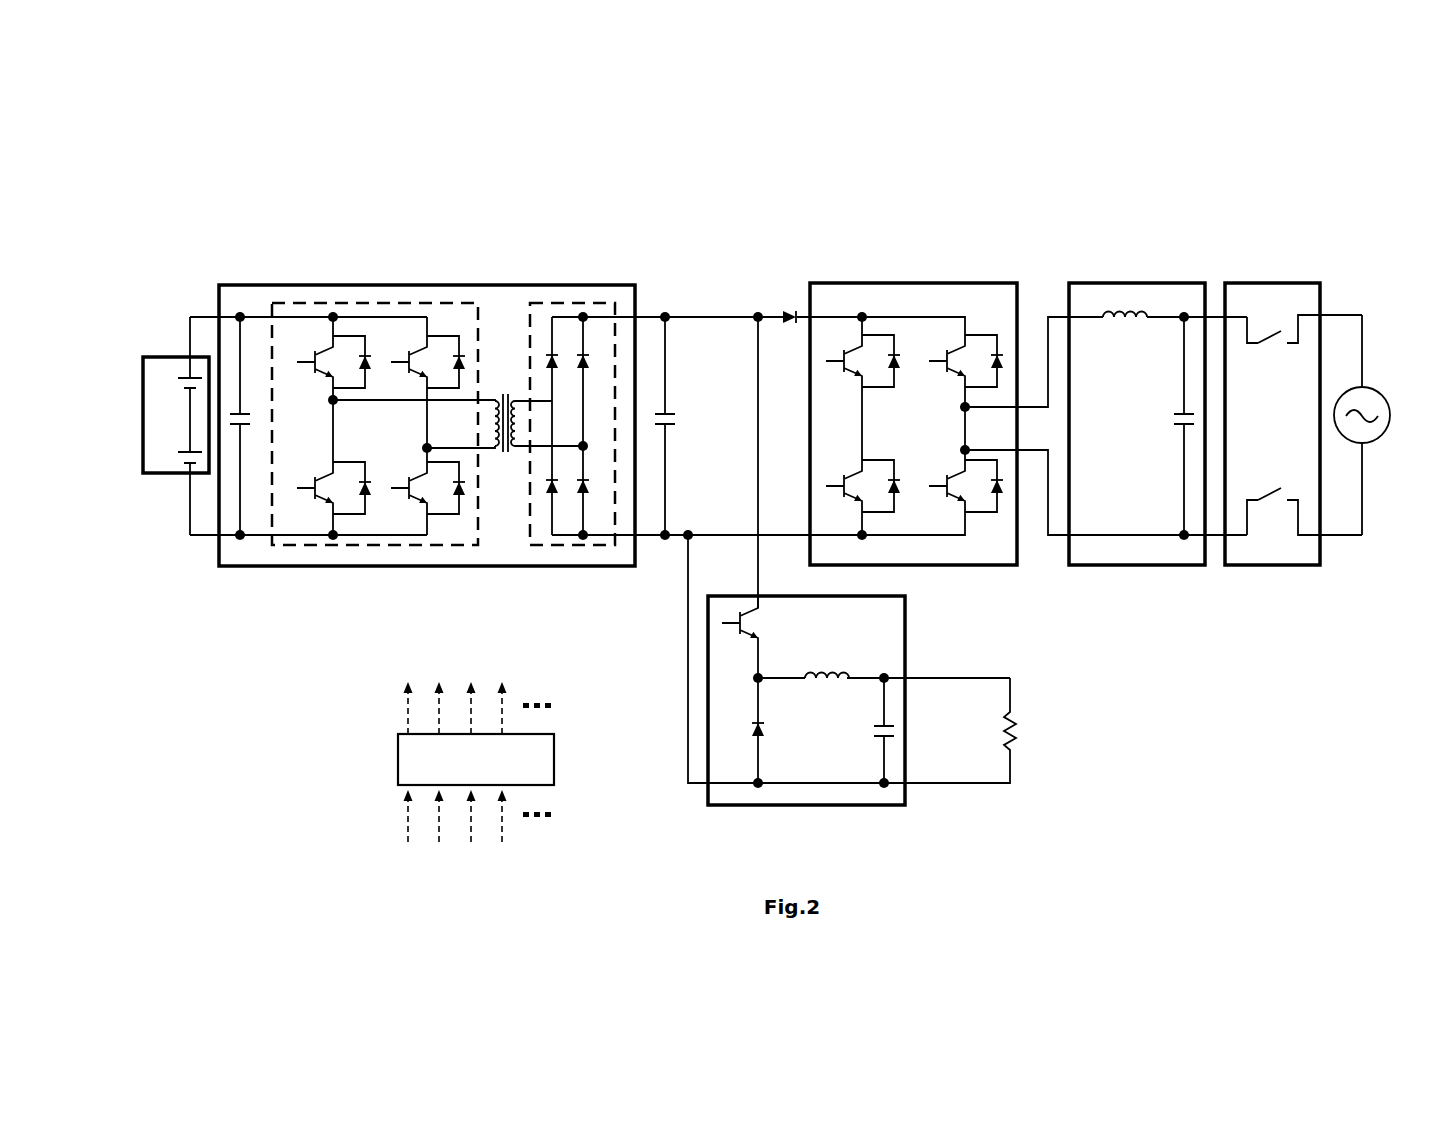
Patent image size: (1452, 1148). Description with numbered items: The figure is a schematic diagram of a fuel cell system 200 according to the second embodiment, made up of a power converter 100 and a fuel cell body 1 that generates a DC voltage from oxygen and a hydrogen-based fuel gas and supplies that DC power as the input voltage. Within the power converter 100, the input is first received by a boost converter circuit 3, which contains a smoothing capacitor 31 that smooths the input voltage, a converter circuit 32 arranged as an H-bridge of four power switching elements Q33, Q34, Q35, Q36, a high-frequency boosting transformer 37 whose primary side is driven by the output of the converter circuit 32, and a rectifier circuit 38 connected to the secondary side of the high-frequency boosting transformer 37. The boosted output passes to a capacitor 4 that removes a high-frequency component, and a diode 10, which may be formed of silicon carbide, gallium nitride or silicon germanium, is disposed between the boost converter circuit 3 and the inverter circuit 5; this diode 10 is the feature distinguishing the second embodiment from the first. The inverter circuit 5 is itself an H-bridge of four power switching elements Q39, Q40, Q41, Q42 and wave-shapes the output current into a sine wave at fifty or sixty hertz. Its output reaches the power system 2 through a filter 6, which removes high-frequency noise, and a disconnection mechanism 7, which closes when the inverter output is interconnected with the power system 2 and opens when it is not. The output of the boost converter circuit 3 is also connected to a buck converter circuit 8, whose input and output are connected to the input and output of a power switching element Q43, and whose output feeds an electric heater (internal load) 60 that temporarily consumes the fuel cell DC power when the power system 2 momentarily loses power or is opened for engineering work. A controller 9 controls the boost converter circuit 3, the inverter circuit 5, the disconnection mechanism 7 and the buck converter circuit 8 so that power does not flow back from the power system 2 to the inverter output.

The fuel cell system 200 is at (826, 111).
The fuel cell body 1 is at (158, 357).
The smoothing capacitor 31 is at (247, 405).
The boost converter circuit 3 is at (465, 283).
The converter circuit 32 is at (380, 300).
The high-frequency boosting transformer 37 is at (507, 456).
The rectifier circuit 38 is at (572, 300).
The capacitor 4 is at (668, 412).
The diode 10 is at (787, 310).
The power converter 100 is at (960, 278).
The inverter circuit 5 is at (912, 283).
The filter 6 is at (1130, 283).
The disconnection mechanism 7 is at (1265, 283).
The power system 2 is at (1372, 385).
The buck converter circuit 8 is at (905, 636).
The electric heater (internal load) 60 is at (1012, 725).
The controller 9 is at (398, 766).
The power switching element Q33 is at (329, 366).
The power switching element Q34 is at (329, 492).
The power switching element Q35 is at (424, 366).
The power switching element Q36 is at (424, 492).
The power switching element Q39 is at (857, 364).
The power switching element Q40 is at (857, 489).
The power switching element Q41 is at (964, 364).
The power switching element Q42 is at (964, 489).
The power switching element Q43 is at (763, 623).